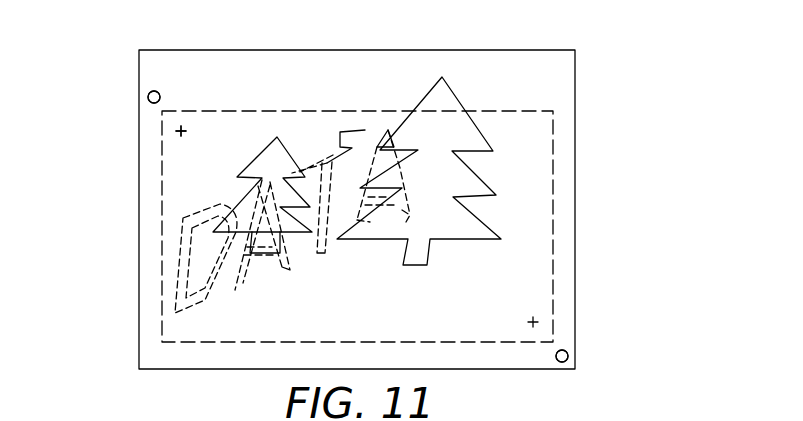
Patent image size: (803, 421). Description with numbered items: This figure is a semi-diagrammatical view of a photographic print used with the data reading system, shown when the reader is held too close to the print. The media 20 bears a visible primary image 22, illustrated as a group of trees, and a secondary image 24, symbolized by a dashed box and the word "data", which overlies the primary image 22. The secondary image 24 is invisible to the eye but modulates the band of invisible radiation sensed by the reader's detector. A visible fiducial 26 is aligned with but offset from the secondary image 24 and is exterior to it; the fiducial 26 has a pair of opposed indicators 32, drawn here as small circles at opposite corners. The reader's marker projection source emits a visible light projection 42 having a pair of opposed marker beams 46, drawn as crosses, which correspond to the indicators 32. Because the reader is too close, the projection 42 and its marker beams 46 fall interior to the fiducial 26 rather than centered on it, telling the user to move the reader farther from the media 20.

The media 20 is at (139, 225).
The primary image 22 is at (481, 127).
The secondary image 24 is at (365, 130).
The fiducial 26 is at (150, 91).
The indicators 32 is at (358, 226).
The visible light projection 42 is at (181, 140).
The marker beams 46 is at (181, 131).